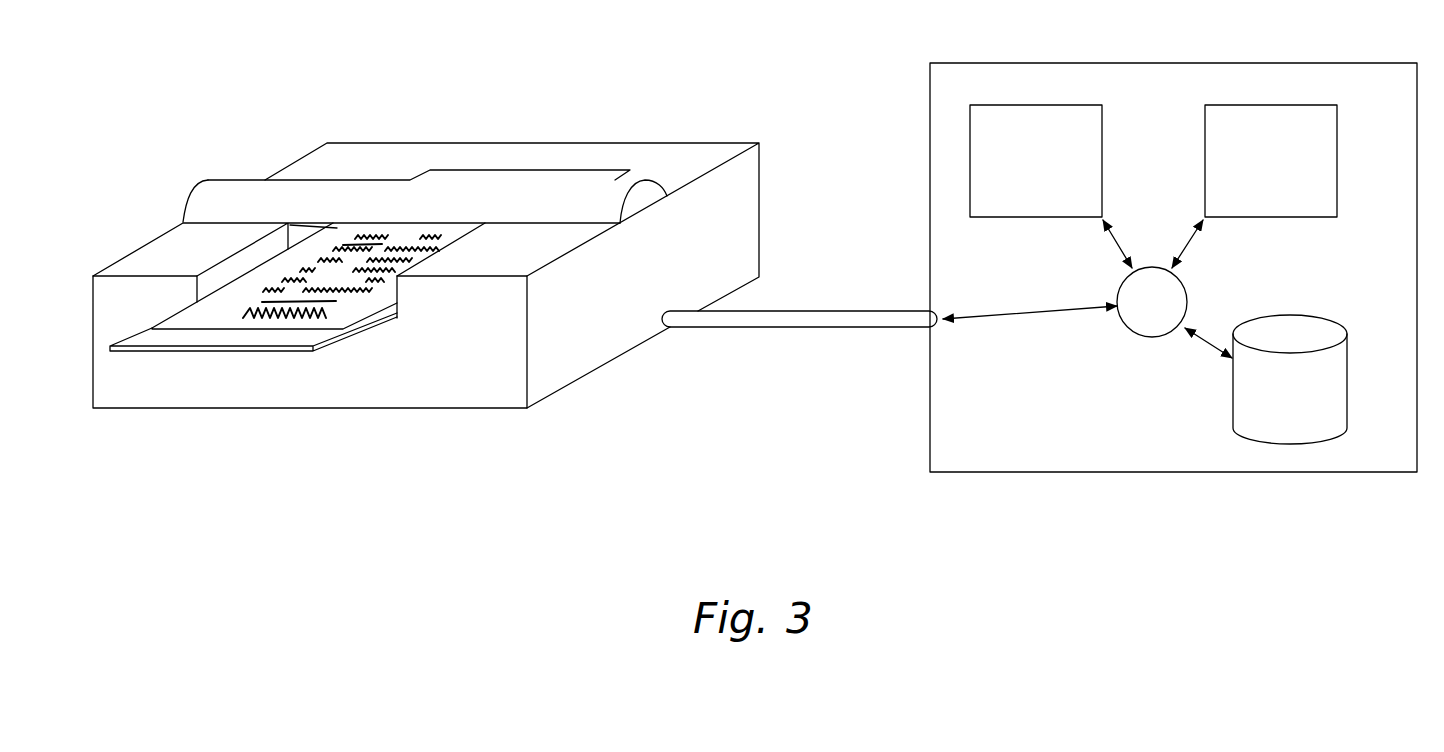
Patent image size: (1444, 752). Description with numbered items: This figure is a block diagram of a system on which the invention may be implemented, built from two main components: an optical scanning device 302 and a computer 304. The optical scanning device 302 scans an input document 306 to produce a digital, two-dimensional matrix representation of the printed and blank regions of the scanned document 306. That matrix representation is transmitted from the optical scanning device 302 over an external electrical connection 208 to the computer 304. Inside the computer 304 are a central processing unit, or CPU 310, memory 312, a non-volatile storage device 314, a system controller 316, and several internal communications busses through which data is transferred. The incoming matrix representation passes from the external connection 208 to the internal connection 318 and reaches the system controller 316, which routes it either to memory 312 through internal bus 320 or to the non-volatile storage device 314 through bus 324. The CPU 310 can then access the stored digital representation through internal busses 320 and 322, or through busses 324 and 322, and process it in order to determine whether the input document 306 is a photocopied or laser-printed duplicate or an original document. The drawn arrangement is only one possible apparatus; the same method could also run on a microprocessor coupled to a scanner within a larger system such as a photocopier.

The optical scanning device 302 is at (448, 143).
The input document 306 is at (280, 333).
The cable 208 is at (807, 328).
The computer 304 is at (1257, 63).
The memory 312 is at (1102, 130).
The central processing unit 310 is at (1338, 130).
The non-volatile storage device 314 is at (1348, 360).
The system controller 316 is at (1133, 338).
The internal connection 318 is at (1032, 313).
The internal bus 320 is at (1117, 247).
The internal bus 322 is at (1192, 245).
The bus 324 is at (1207, 348).